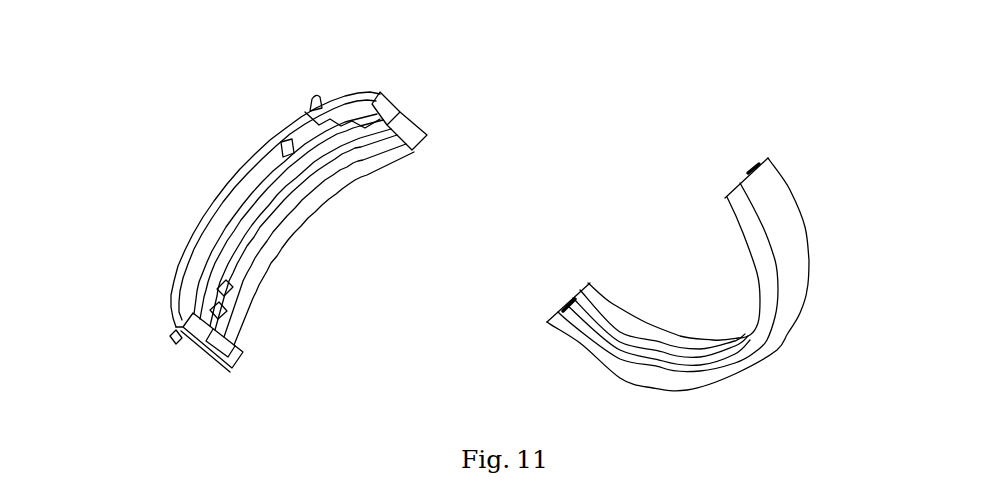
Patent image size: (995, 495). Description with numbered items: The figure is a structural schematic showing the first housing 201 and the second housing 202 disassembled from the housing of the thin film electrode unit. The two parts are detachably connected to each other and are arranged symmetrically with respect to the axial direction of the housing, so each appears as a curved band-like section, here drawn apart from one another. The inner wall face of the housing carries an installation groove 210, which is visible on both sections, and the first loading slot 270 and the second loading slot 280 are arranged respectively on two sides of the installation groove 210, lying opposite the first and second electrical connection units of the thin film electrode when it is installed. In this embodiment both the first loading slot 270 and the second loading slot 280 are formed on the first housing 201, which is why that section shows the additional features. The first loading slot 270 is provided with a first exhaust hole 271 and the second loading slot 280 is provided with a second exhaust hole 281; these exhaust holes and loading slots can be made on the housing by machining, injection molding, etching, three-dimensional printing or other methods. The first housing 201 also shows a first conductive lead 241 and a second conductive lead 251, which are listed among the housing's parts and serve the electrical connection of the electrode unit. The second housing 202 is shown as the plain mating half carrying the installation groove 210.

The first housing 201 is at (247, 166).
The second housing 202 is at (785, 215).
The installation groove 210 is at (402, 127).
The first conductive lead 241 is at (180, 338).
The second conductive lead 251 is at (311, 98).
The first loading slot 270 is at (236, 287).
The first exhaust hole 271 is at (228, 325).
The second loading slot 280 is at (292, 151).
The second exhaust hole 281 is at (318, 127).